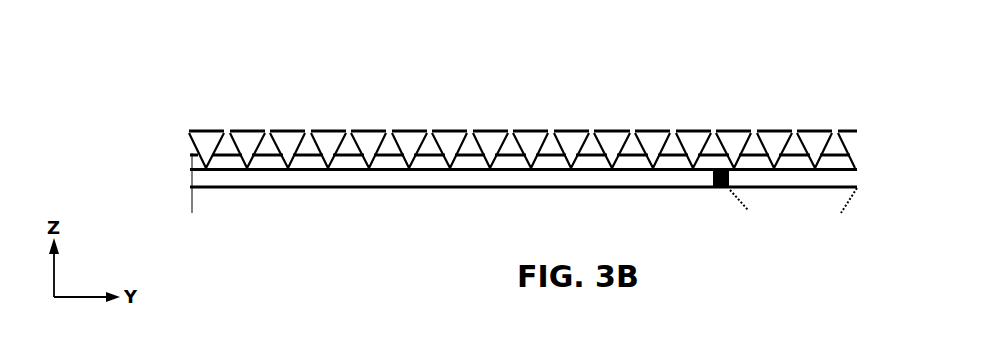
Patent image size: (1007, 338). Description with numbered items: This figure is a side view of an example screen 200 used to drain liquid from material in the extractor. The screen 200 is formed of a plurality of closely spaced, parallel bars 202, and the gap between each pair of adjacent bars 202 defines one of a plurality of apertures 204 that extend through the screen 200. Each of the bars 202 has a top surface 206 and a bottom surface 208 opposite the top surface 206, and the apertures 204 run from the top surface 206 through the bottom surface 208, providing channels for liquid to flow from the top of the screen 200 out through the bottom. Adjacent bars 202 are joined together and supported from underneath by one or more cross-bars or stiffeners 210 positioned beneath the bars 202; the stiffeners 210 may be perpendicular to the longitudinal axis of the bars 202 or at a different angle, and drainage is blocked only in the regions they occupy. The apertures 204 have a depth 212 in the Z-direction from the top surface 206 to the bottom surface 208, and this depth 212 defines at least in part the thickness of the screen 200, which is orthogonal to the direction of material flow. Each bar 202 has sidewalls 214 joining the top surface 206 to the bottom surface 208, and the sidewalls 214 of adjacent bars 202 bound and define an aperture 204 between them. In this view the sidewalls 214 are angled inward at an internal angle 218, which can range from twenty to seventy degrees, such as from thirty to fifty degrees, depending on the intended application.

The screen 200 is at (535, 136).
The bars 202 is at (330, 140).
The apertures 204 is at (507, 132).
The top surface 206 is at (609, 132).
The bottom surface 208 is at (607, 170).
The stiffeners 210 is at (800, 175).
The depth 212 is at (487, 169).
The sidewalls 214 is at (437, 153).
The internal angle 218 is at (250, 153).